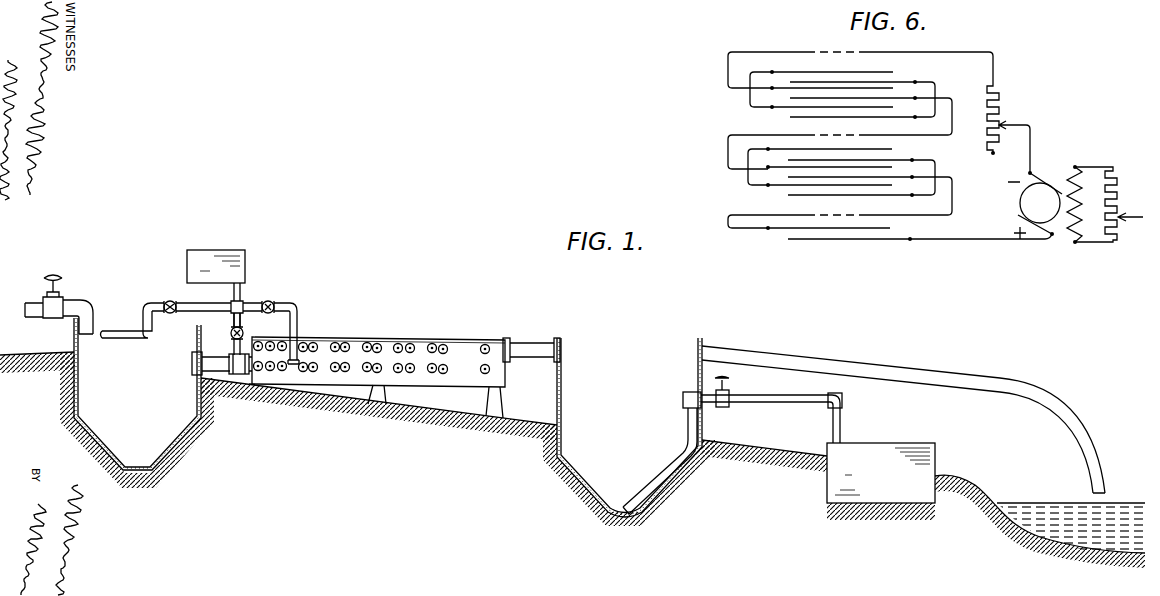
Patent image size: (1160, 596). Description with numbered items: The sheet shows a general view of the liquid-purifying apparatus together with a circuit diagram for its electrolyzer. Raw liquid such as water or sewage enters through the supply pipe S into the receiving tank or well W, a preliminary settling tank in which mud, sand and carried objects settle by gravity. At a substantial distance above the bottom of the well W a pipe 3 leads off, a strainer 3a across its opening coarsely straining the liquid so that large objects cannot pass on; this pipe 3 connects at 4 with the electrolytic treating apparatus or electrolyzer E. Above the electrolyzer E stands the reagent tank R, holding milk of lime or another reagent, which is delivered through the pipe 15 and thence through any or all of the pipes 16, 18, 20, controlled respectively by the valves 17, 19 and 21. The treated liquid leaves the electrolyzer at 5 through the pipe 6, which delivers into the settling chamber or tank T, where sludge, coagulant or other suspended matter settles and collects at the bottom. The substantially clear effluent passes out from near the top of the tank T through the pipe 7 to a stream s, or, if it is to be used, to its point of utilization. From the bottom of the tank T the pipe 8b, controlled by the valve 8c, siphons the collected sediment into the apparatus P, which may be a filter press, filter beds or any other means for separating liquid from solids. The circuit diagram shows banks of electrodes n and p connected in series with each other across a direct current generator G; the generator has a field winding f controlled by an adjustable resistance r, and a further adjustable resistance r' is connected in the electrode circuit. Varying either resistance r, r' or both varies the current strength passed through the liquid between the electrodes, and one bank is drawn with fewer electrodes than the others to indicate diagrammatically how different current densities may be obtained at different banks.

In FIG. 1, the supply pipe S is at (72, 300).
In FIG. 1, the receiving tank or well W is at (62, 387).
In FIG. 1, the reagent tank R is at (245, 251).
In FIG. 1, the reagent pipe 16 is at (144, 311).
In FIG. 1, the valve 17 is at (170, 300).
In FIG. 1, the reagent delivery pipe 15 is at (240, 295).
In FIG. 1, the valve 21 is at (272, 301).
In FIG. 1, the reagent pipe 20 is at (297, 306).
In FIG. 1, the reagent pipe 18 is at (234, 322).
In FIG. 1, the valve 19 is at (241, 334).
In FIG. 1, the pipe 3 is at (215, 358).
In FIG. 1, the strainer 3a is at (192, 366).
In FIG. 1, the connection of pipe 3 to electrolyzer 4 is at (250, 385).
In FIG. 1, the electrolyzer E is at (368, 337).
In FIG. 1, the electrolyzer outlet 5 is at (508, 343).
In FIG. 1, the pipe 6 is at (533, 344).
In FIG. 1, the settling tank T is at (617, 338).
In FIG. 1, the effluent pipe 7 is at (821, 367).
In FIG. 1, the valve 8c is at (728, 408).
In FIG. 1, the siphon pipe 8b is at (667, 476).
In FIG. 1, the sludge drying apparatus P is at (881, 473).
In FIG. 1, the stream s is at (1026, 503).
In FIG. 6, the electrode n is at (808, 118).
In FIG. 6, the electrode p is at (850, 118).
In FIG. 6, the adjustable resistance r' is at (1005, 119).
In FIG. 6, the direct current generator G is at (1030, 180).
In FIG. 6, the field winding f is at (1070, 236).
In FIG. 6, the adjustable resistance r is at (1109, 204).